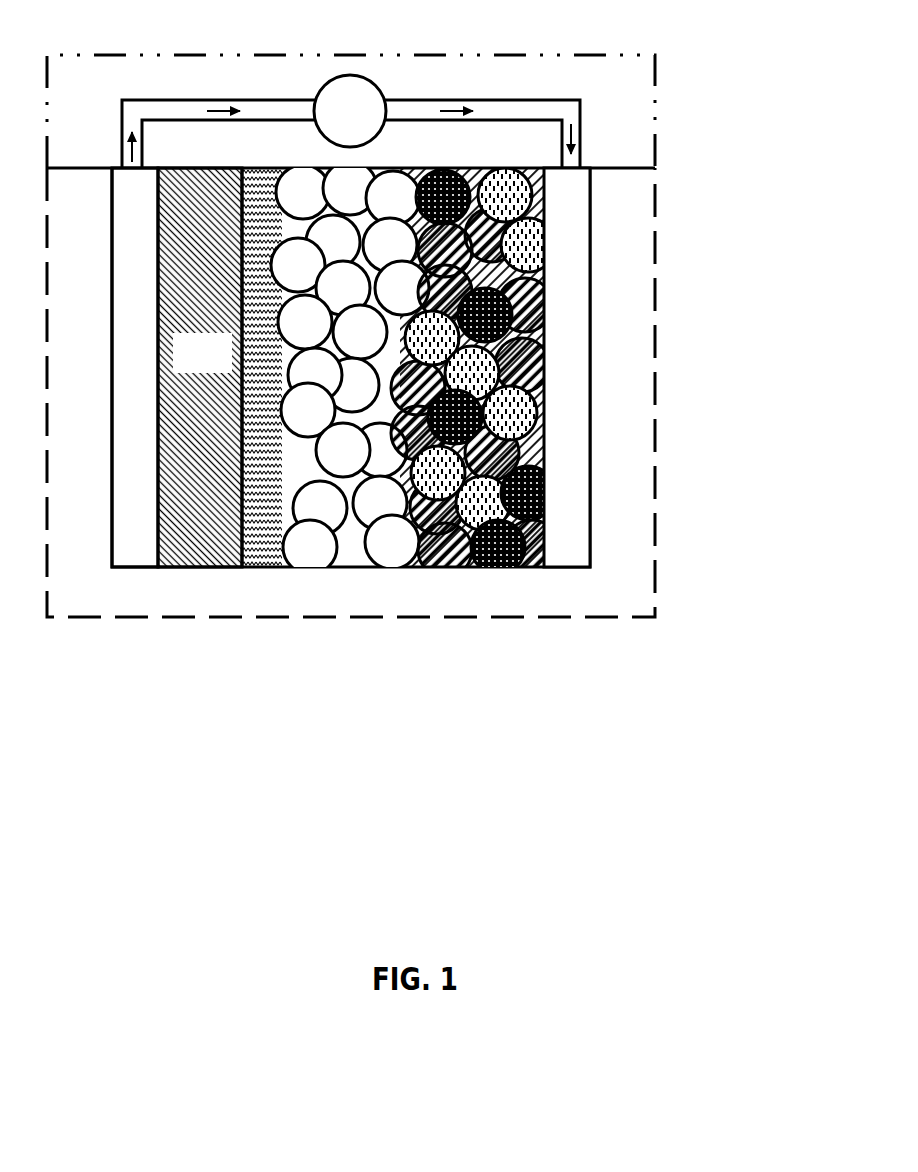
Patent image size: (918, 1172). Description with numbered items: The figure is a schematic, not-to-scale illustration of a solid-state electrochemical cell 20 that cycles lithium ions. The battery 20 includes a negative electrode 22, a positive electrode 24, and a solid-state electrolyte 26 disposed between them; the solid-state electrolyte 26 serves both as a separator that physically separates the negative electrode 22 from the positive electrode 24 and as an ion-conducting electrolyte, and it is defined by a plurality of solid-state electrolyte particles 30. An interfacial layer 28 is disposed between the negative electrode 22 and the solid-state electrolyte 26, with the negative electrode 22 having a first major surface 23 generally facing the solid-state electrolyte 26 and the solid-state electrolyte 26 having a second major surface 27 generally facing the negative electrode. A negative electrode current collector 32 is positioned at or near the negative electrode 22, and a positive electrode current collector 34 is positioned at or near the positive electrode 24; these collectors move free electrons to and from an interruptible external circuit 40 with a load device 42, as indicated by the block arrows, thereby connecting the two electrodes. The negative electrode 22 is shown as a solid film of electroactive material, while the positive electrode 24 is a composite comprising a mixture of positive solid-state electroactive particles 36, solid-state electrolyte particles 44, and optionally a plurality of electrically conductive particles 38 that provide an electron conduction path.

The electrochemical cell 20 is at (674, 243).
The negative electrode 22 is at (200, 367).
The first major surface 23 is at (240, 525).
The positive electrode 24 is at (472, 579).
The solid-state electrolyte 26 is at (369, 423).
The second major surface 27 is at (282, 540).
The interfacial layer 28 is at (260, 542).
The solid-state electrolyte particles 30 is at (348, 552).
The negative electrode current collector 32 is at (128, 512).
The positive electrode current collector 34 is at (568, 257).
The positive solid-state electroactive particles 36 is at (513, 370).
The electrically conductive particles 38 is at (545, 503).
The external circuit 40 is at (674, 120).
The load device 42 is at (351, 121).
The solid-state electrolyte particles 44 is at (512, 423).